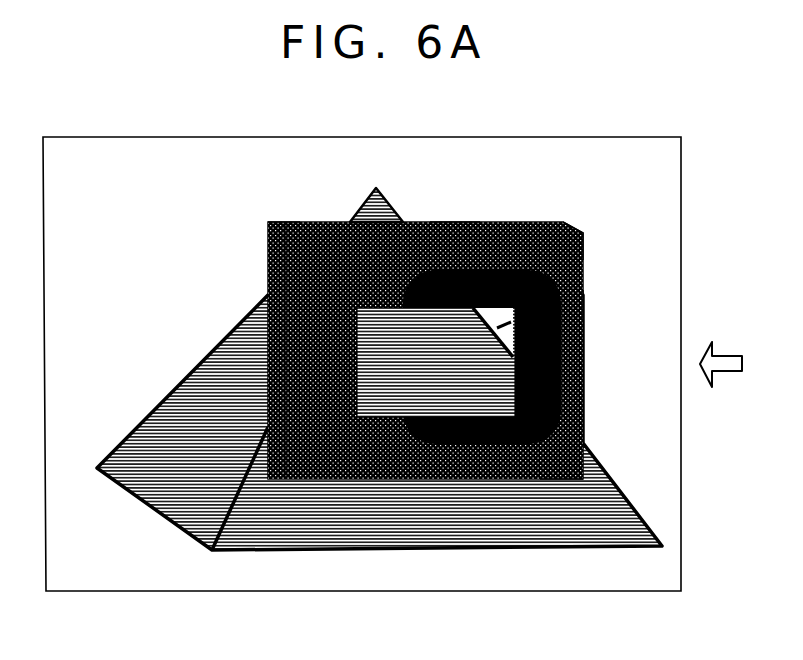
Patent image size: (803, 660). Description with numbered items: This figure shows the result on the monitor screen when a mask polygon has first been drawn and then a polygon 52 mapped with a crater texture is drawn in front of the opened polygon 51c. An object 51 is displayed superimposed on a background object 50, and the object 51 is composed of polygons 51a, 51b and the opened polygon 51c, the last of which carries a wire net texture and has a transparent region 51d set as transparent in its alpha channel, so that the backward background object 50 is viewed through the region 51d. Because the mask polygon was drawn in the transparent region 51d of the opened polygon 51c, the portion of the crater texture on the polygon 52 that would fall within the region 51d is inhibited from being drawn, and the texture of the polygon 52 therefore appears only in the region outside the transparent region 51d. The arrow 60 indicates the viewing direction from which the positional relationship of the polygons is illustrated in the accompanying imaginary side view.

The background object 50 is at (225, 337).
The object 51 is at (422, 548).
The polygon 51a is at (287, 222).
The polygon 51b is at (453, 222).
The opened polygon 51c is at (583, 257).
The transparent region 51d is at (583, 305).
The polygon 52 is at (568, 479).
The arrow 60 is at (724, 367).